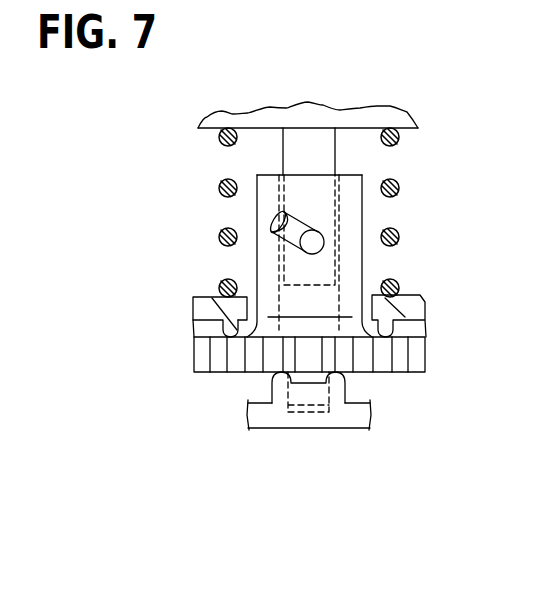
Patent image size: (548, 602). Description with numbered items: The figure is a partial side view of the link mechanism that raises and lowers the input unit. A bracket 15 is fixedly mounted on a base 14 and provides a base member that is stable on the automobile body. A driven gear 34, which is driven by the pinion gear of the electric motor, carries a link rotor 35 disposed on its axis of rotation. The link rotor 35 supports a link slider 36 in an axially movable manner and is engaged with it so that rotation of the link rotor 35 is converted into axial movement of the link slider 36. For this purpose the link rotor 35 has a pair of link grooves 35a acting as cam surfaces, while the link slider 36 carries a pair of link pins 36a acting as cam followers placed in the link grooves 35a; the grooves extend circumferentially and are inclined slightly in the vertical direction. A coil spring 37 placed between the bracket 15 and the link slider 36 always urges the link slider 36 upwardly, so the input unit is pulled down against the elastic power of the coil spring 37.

The base 14 is at (355, 415).
The bracket 15 is at (216, 300).
The driven gear 34 is at (217, 362).
The link rotor 35 is at (364, 208).
The link groove 35a is at (270, 225).
The link slider 36 is at (393, 121).
The link pin 36a is at (312, 242).
The coil spring 37 is at (396, 145).